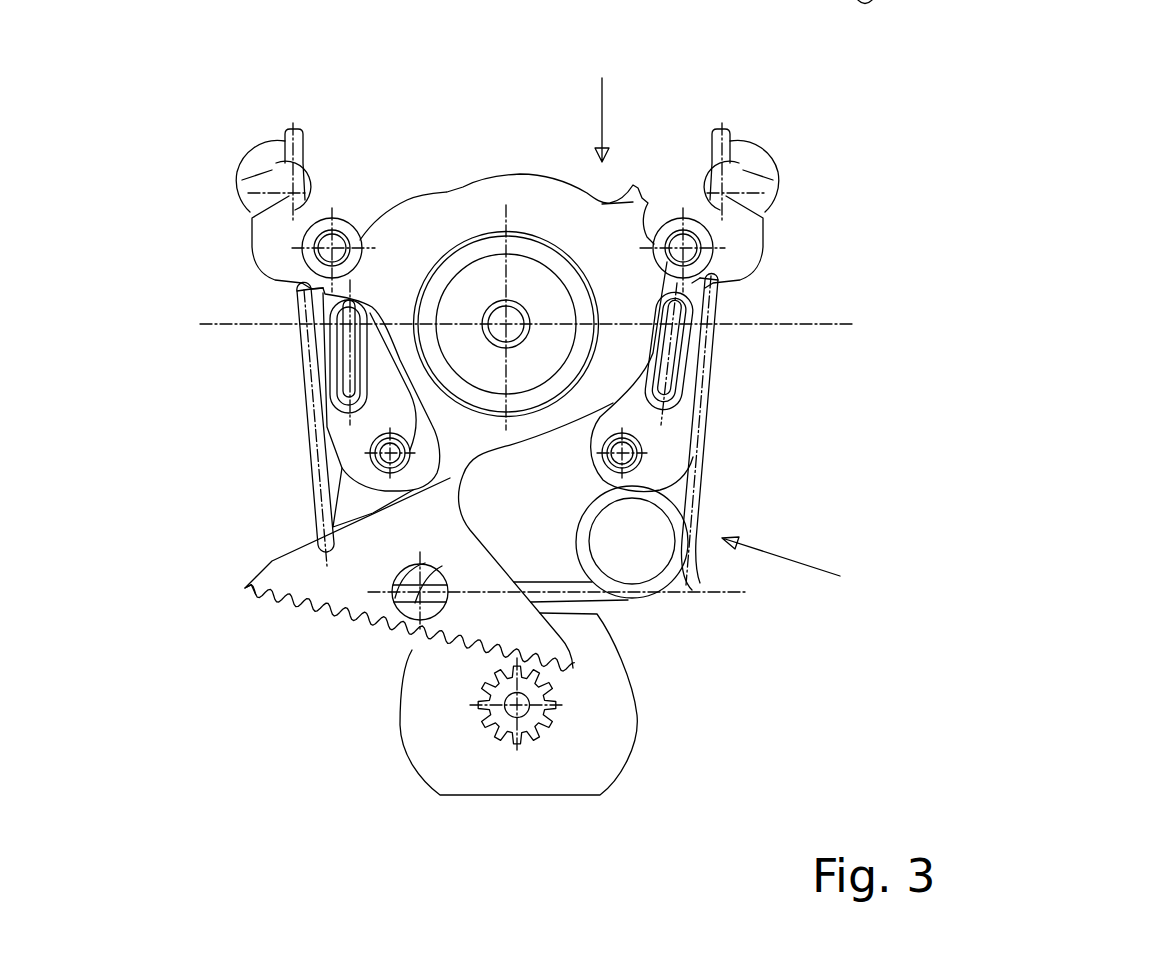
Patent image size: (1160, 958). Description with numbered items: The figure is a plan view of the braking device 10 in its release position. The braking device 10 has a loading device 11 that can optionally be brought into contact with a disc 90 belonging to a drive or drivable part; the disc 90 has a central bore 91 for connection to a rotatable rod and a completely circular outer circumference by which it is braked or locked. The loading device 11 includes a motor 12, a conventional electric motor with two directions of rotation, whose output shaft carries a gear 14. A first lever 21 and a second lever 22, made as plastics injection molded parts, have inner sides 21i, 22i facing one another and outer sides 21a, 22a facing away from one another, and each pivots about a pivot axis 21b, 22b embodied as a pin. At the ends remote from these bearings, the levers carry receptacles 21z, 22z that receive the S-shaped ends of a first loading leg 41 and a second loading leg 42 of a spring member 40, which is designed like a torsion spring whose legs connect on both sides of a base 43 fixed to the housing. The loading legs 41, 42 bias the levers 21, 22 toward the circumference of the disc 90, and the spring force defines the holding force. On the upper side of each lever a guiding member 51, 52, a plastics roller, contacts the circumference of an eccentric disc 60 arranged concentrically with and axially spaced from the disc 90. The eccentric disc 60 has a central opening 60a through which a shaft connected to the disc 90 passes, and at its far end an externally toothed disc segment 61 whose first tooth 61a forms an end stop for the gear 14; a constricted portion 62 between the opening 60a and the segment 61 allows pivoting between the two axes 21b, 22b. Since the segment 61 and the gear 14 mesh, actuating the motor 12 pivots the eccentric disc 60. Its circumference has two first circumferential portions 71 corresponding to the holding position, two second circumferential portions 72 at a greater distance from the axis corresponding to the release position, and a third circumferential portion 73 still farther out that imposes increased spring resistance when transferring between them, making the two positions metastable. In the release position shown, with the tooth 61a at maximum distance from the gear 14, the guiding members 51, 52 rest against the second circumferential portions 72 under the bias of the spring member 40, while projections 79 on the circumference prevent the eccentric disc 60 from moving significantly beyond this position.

The braking device 10 is at (604, 108).
The loading device 11 is at (801, 568).
The motor 12 is at (600, 750).
The gear 14 is at (533, 715).
The first lever 21 is at (675, 437).
The outer side of first lever 21a is at (682, 352).
The pivot axis of first lever 21b is at (642, 457).
The inner side of first lever 21i is at (657, 243).
The receptacle of first lever 21z is at (726, 196).
The second lever 22 is at (345, 433).
The outer side of second lever 22a is at (317, 378).
The pivot axis of second lever 22b is at (375, 458).
The inner side of second lever 22i is at (344, 225).
The receptacle of second lever 22z is at (289, 196).
The spring member 40 is at (673, 575).
The first loading leg 41 is at (715, 310).
The second loading leg 42 is at (305, 340).
The base of spring member 43 is at (568, 595).
The guiding member 51 is at (700, 228).
The guiding member 52 is at (360, 230).
The eccentric disc 60 is at (418, 247).
The opening 60a is at (473, 258).
The toothed disc segment 61 is at (374, 656).
The first tooth 61a is at (265, 583).
The constricted portion 62 is at (448, 478).
The first circumferential portion 71 is at (653, 357).
The second circumferential portion 72 is at (700, 278).
The third circumferential portion 73 is at (650, 322).
The projections 79 is at (300, 290).
The disc 90 is at (548, 290).
The central bore 91 is at (519, 303).